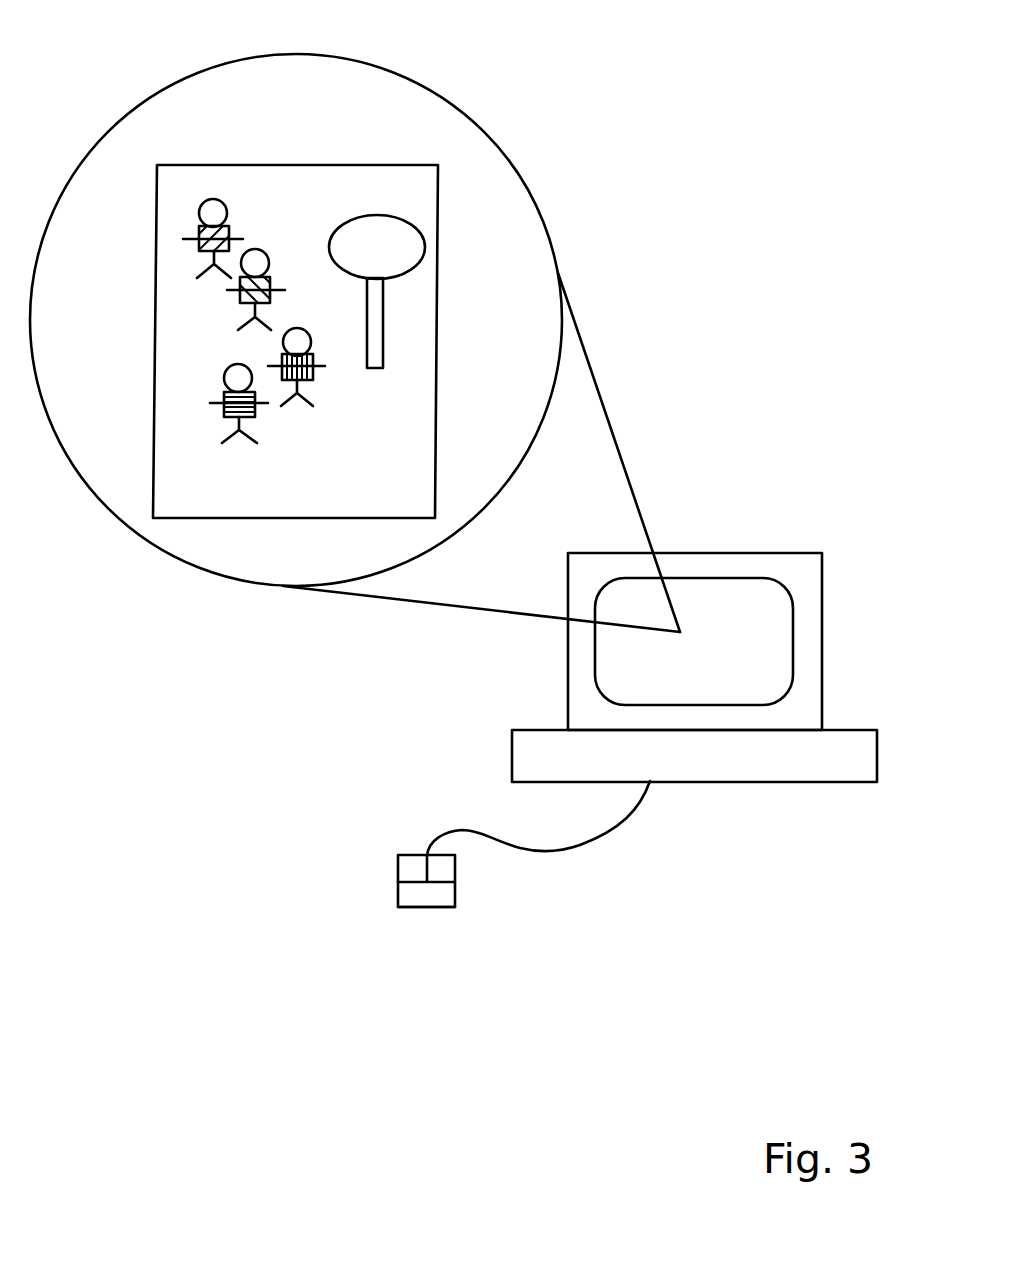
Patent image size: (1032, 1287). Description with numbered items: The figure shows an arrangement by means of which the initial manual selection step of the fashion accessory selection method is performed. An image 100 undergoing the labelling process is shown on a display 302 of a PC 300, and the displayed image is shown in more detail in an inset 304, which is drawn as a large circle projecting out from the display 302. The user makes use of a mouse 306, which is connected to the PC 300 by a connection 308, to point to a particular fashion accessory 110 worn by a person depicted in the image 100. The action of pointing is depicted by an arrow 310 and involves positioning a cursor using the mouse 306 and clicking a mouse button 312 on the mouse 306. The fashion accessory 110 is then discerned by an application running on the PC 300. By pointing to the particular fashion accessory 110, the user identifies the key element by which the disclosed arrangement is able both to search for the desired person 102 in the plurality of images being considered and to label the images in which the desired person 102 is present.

The image 100 is at (262, 131).
The desired person 102 is at (166, 215).
The fashion accessory 110 is at (198, 243).
The arrow 310 is at (246, 222).
The inset 304 is at (515, 99).
The PC 300 is at (716, 631).
The display 302 is at (767, 652).
The mouse button 312 is at (405, 855).
The mouse 306 is at (425, 907).
The connection 308 is at (542, 853).